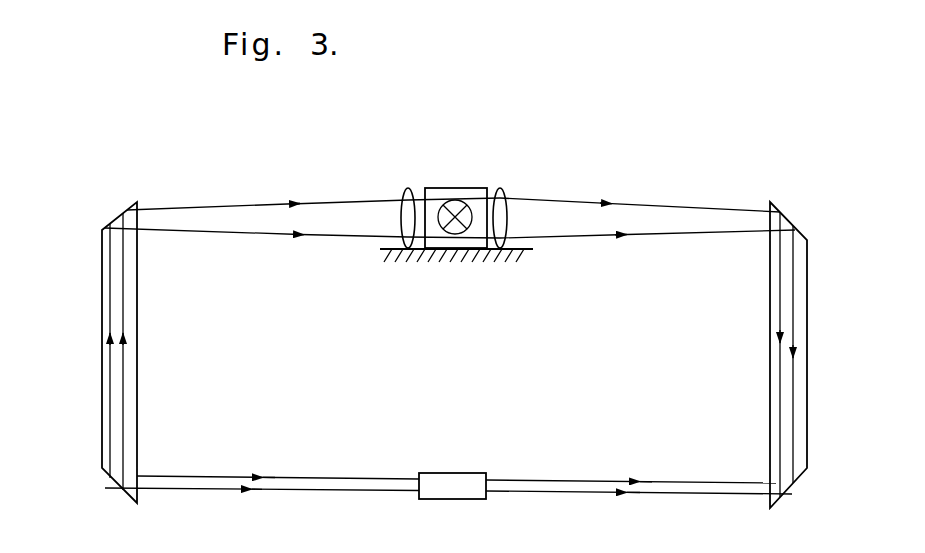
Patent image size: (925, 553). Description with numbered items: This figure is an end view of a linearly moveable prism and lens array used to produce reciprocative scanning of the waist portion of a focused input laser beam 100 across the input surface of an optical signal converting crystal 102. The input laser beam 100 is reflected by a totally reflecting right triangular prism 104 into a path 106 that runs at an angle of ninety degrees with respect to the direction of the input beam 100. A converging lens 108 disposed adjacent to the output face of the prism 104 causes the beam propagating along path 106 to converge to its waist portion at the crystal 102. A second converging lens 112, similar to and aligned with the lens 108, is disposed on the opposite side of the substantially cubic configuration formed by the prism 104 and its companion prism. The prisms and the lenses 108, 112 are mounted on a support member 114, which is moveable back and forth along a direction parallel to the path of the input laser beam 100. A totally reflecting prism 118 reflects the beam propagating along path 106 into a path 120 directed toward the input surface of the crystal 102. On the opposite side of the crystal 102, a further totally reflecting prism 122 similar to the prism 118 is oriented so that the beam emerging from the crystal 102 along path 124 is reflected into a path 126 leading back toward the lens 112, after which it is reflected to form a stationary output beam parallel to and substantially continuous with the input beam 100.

The input laser beam 100 is at (455, 203).
The optical signal converting crystal 102 is at (486, 473).
The totally reflecting right triangular prism 104 is at (484, 189).
The path 106 is at (670, 217).
The converging lens 108 is at (505, 190).
The converging lens 112 is at (404, 191).
The support member 114 is at (392, 252).
The totally reflecting prism 118 is at (807, 295).
The path 120 is at (681, 486).
The totally reflecting prism 122 is at (102, 277).
The path 124 is at (200, 482).
The path 126 is at (196, 219).